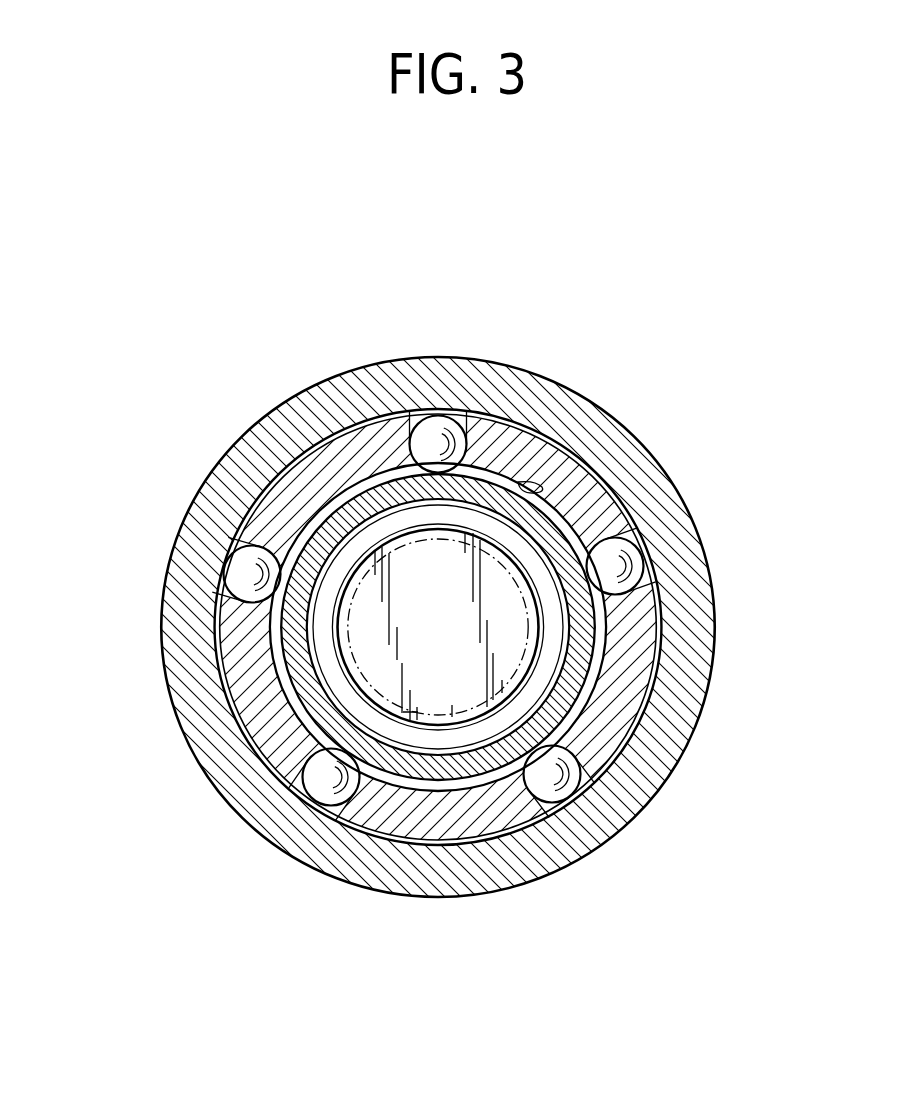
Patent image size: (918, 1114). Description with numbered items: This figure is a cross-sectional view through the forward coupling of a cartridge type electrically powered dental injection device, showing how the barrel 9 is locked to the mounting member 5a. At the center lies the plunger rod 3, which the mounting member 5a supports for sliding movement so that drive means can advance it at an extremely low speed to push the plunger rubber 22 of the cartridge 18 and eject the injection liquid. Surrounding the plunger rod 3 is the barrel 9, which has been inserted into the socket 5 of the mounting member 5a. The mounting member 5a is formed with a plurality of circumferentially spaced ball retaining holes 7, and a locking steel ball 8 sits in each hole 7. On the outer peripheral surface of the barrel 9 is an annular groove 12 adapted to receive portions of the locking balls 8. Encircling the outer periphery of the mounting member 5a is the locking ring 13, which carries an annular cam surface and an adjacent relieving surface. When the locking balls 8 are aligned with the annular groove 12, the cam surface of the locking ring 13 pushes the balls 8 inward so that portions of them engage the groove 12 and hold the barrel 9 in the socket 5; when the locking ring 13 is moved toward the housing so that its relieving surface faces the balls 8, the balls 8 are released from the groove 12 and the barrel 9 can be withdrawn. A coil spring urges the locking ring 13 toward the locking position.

The plunger rod 3 is at (452, 715).
The socket 5 is at (542, 490).
The mounting member 5a is at (528, 450).
The ball retaining holes 7 is at (422, 450).
The locking steel balls 8 is at (253, 572).
The barrel 9 is at (297, 663).
The annular groove 12 is at (292, 700).
The locking ring 13 is at (233, 490).
The cartridge 18 is at (355, 545).
The plunger rubber 22 is at (452, 644).